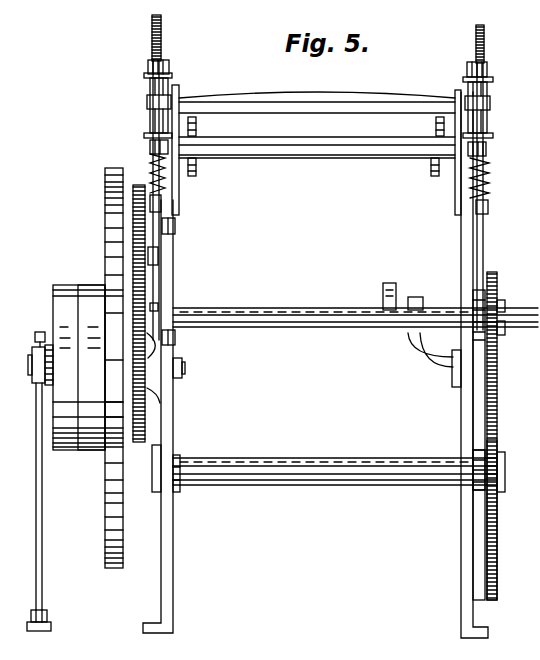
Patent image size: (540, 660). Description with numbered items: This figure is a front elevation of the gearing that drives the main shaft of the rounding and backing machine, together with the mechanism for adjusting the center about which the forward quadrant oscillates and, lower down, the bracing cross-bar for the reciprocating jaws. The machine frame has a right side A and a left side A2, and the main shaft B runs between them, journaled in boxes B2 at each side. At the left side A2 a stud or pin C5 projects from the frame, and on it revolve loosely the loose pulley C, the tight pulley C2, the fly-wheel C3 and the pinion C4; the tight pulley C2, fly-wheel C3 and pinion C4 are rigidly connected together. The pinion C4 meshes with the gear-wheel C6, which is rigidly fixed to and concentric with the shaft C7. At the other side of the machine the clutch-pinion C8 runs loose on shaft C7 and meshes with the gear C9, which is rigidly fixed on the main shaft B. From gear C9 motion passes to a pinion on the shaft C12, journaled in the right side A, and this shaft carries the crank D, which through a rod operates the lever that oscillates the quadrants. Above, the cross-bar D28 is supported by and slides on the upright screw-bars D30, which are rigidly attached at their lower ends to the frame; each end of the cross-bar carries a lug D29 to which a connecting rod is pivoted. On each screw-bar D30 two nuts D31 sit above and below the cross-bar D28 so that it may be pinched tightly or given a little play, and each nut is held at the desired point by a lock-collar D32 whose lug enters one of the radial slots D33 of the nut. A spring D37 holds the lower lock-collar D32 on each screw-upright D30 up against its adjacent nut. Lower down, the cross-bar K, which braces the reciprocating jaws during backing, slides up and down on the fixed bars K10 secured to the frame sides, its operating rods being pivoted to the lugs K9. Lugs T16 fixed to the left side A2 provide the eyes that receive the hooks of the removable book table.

The right side of the frame A is at (459, 365).
The left side of the frame A2 is at (173, 585).
The main shaft B is at (310, 467).
The boxes B2 is at (175, 490).
The loose pulley C is at (88, 367).
The tight pulley C2 is at (91, 367).
The fly-wheel C3 is at (108, 213).
The pinion C4 is at (150, 403).
The stud or pin C5 is at (183, 368).
The gear-wheel C6 is at (140, 185).
The shaft C7 is at (288, 318).
The clutch-pinion C8 is at (498, 283).
The gear C9 is at (498, 392).
The shaft C12 is at (422, 297).
The crank D is at (421, 326).
The cross-bar D28 is at (317, 103).
The lug D29 is at (196, 126).
The upright screw-bar D30 is at (152, 43).
The nut D31 is at (150, 90).
The lock-collar D32 is at (169, 66).
The radial slots D33 is at (146, 74).
The spring D37 is at (167, 178).
The cross-bar K is at (317, 148).
The lugs K9 is at (197, 165).
The fixed bars K10 is at (179, 94).
The lugs T16 is at (176, 226).